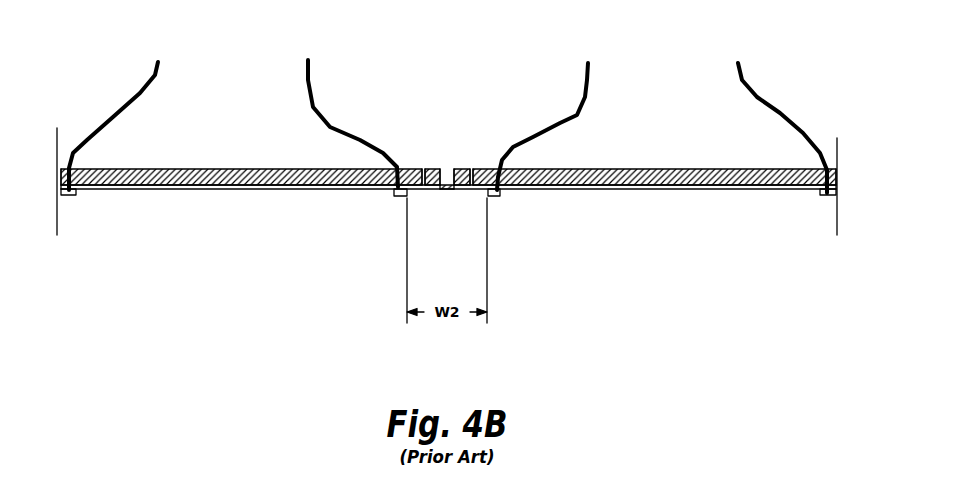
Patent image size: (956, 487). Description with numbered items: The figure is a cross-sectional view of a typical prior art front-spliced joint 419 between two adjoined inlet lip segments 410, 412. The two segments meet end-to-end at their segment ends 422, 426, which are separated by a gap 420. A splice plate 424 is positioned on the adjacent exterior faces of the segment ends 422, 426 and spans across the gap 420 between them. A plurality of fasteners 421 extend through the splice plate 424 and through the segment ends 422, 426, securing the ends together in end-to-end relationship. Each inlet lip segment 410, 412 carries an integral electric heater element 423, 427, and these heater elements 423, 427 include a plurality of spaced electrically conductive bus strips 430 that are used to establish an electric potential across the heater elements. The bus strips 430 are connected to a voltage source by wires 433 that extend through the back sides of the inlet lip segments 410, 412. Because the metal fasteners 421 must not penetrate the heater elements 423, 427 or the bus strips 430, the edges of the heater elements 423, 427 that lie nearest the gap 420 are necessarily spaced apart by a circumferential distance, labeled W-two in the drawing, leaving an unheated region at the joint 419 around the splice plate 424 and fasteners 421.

The spliced joint 419 is at (447, 125).
The wires 433 is at (448, 126).
The inlet lip segment 410 is at (241, 154).
The inlet lip segment 412 is at (654, 156).
The segment end 426 is at (390, 138).
The fasteners 421 is at (477, 138).
The segment end 422 is at (483, 142).
The gap 420 is at (410, 115).
The heater element 427 is at (250, 199).
The heater element 423 is at (645, 199).
The splice plate 424 is at (522, 244).
The bus strips 430 is at (448, 226).